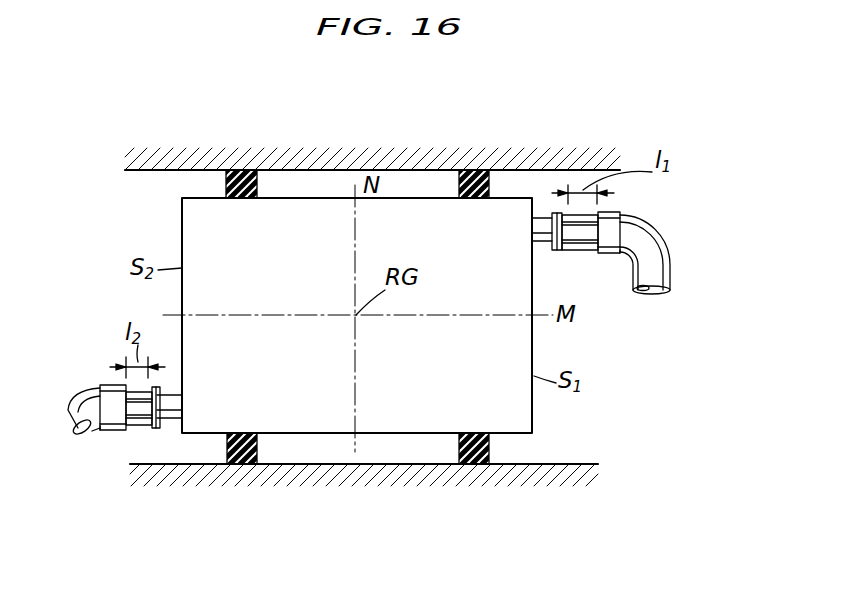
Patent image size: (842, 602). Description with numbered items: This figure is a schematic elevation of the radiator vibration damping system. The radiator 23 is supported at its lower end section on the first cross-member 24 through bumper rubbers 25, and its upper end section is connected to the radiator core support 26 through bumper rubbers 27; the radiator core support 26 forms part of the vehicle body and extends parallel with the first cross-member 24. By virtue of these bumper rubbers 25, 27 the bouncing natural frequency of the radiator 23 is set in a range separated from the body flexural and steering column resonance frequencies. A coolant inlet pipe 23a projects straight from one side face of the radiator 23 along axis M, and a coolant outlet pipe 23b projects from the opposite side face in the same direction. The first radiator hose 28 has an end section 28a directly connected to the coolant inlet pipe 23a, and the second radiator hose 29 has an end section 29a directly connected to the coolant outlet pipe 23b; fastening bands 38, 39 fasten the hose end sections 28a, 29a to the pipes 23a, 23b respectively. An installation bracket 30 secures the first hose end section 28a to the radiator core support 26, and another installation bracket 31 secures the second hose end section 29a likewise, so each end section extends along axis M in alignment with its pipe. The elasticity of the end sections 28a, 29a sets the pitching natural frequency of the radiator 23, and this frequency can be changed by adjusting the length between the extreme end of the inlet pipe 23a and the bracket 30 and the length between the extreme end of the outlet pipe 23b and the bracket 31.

The radiator 23 is at (182, 228).
The coolant inlet pipe 23a is at (546, 242).
The coolant outlet pipe 23b is at (182, 390).
The first cross-member 24 is at (578, 463).
The bumper rubbers 25 is at (243, 466).
The radiator core support 26 is at (597, 160).
The bumper rubbers 27 is at (239, 171).
The first radiator hose 28 is at (655, 248).
The first radiator hose end section 28a is at (603, 258).
The second radiator hose 29 is at (80, 405).
The second radiator hose end section 29a is at (125, 425).
The installation bracket 30 is at (612, 213).
The installation bracket 31 is at (108, 392).
The fastening band 38 is at (556, 212).
The fastening band 39 is at (155, 430).